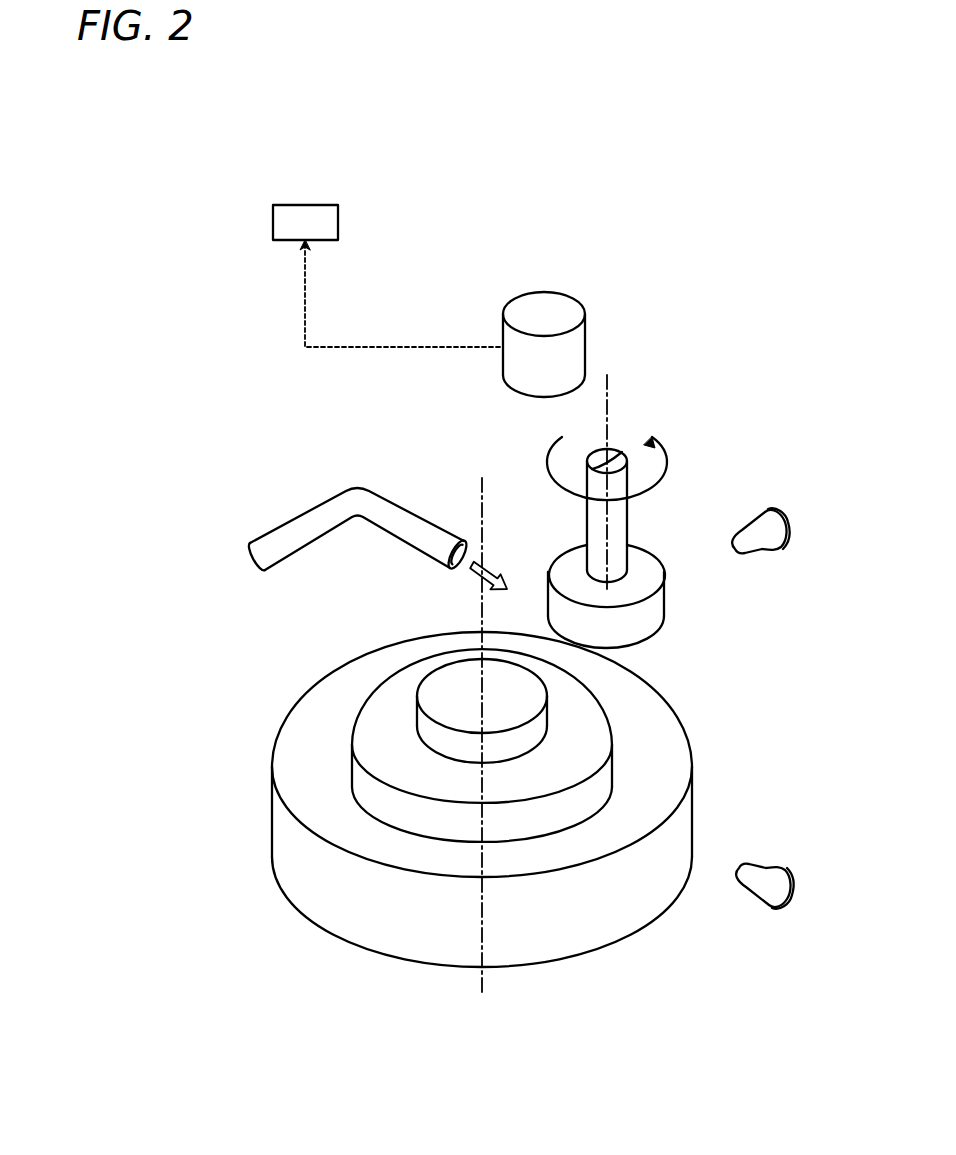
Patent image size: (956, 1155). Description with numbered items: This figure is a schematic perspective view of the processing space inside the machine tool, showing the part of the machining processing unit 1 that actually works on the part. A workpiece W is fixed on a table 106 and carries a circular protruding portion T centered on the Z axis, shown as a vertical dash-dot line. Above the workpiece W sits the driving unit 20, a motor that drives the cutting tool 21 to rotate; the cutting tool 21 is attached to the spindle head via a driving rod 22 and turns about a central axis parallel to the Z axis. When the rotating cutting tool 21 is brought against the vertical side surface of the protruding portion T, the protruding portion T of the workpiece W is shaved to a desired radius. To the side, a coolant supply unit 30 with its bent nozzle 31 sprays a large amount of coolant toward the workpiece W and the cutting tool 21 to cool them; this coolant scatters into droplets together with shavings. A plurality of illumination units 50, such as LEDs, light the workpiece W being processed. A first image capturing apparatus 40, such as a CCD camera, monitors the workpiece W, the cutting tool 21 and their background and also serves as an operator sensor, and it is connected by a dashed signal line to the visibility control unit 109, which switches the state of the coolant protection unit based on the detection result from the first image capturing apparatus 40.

The machining processing unit 1 is at (466, 198).
The driving unit 20 is at (646, 511).
The cutting tool 21 is at (657, 613).
The driving rod 22 is at (615, 520).
The coolant supply unit 30 is at (358, 511).
The nozzle 31 is at (456, 572).
The first image capturing apparatus 40 is at (573, 362).
The illumination unit 50 is at (762, 555).
The table 106 is at (622, 905).
The visibility control unit 109 is at (388, 276).
The protruding portion T is at (427, 725).
The workpiece W is at (368, 778).
The Z axis Z is at (481, 726).